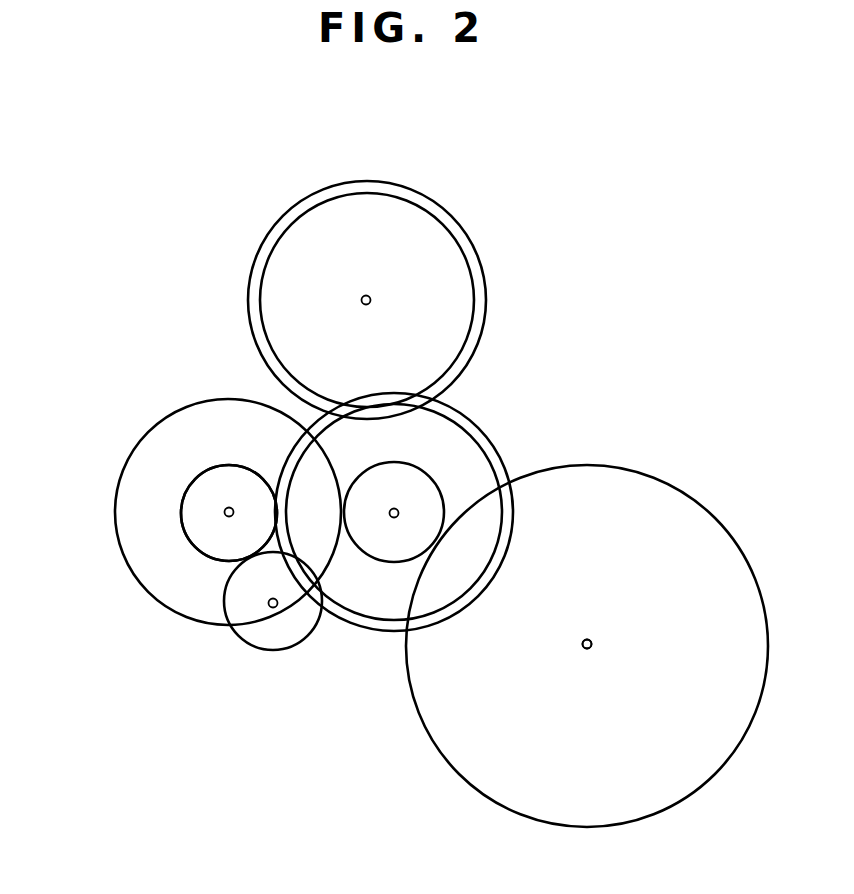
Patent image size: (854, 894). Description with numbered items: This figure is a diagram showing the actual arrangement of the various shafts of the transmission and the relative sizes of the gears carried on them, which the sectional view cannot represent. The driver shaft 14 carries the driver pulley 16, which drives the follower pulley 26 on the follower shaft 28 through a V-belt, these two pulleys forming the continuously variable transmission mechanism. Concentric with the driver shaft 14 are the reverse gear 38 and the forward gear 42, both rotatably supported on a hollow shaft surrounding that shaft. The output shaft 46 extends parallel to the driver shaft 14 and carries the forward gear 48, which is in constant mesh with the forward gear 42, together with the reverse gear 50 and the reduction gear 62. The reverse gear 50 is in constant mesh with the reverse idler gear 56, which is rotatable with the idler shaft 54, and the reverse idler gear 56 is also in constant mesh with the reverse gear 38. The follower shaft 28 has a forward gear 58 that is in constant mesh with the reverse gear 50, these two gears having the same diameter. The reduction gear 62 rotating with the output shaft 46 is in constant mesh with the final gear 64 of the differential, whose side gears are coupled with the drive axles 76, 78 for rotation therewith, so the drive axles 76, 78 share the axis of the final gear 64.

The driver shaft 14 is at (229, 507).
The driver pulley 16 is at (203, 399).
The follower pulley 26 is at (268, 229).
The follower shaft 28 is at (371, 300).
The reverse gear 38 is at (180, 520).
The forward gear 42 is at (229, 513).
The output shaft 46 is at (394, 518).
The forward gear 48 is at (473, 420).
The reverse gear 50 is at (483, 459).
The idler shaft 54 is at (270, 599).
The reverse idler gear 56 is at (308, 638).
The forward gear 58 is at (467, 272).
The reduction gear 62 is at (429, 473).
The final gear 64 is at (662, 480).
The drive axle 76 is at (592, 642).
The drive axle 78 is at (587, 644).